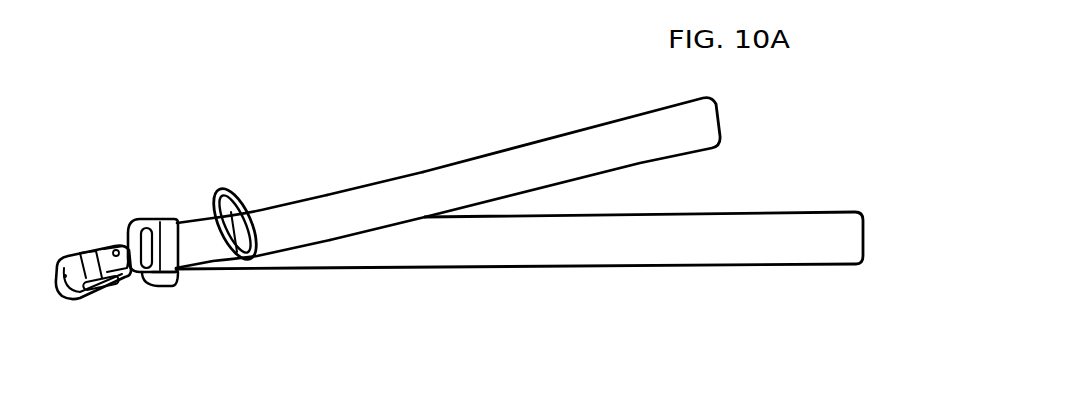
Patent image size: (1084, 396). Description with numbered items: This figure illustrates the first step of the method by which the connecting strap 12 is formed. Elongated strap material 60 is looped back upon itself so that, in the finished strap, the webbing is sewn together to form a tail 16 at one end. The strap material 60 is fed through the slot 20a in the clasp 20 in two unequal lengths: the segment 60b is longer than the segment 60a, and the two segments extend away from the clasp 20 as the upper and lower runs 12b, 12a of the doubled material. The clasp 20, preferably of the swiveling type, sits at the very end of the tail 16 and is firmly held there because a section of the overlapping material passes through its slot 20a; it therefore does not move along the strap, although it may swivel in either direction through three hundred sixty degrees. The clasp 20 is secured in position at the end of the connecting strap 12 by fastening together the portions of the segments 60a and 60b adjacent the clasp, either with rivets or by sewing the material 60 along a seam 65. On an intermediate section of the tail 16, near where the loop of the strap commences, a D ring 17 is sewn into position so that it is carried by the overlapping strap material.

The connecting strap 12 is at (340, 188).
The lower strap section 12a is at (398, 253).
The upper strap section 12b is at (423, 180).
The tail 16 is at (202, 253).
The D ring 17 is at (219, 190).
The clasp 20 is at (72, 250).
The slot 20a is at (137, 220).
The elongated strap material 60 is at (674, 146).
The segment 60a is at (563, 140).
The segment 60b is at (753, 248).
The seam 65 is at (172, 278).